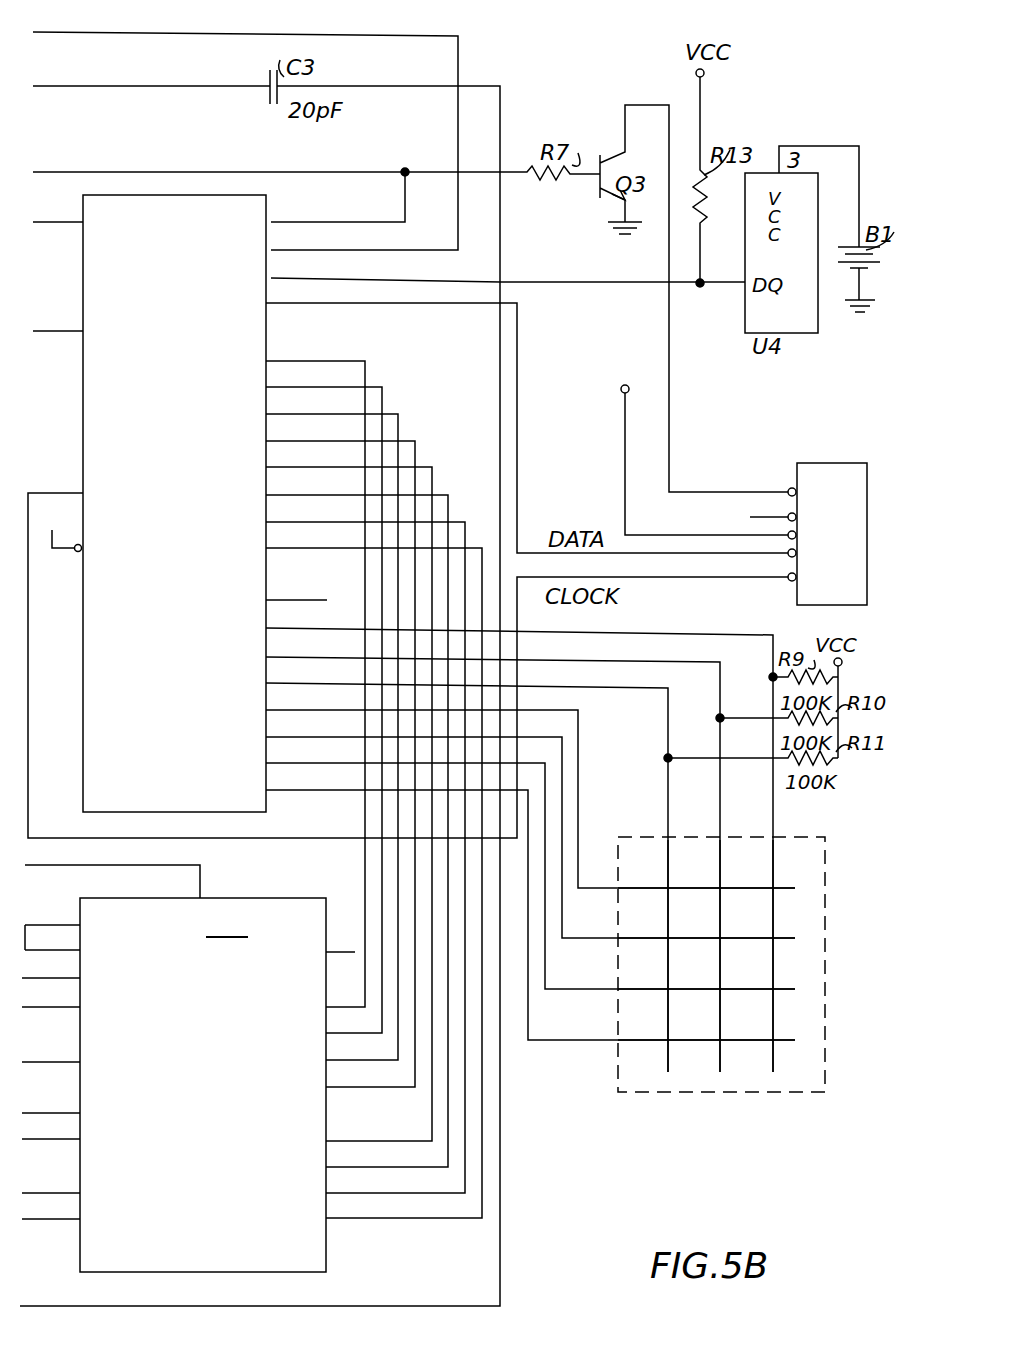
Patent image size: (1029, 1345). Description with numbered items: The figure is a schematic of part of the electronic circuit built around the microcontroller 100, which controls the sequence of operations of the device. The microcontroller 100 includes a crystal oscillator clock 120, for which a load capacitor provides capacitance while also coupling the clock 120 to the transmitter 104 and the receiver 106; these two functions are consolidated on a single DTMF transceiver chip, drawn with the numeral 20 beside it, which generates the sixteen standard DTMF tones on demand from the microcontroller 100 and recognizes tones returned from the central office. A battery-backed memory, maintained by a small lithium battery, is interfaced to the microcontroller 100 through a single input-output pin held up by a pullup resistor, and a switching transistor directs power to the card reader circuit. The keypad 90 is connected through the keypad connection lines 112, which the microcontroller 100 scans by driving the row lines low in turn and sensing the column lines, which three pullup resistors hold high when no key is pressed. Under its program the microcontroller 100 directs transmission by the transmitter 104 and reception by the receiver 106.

The microcontroller 100 is at (100, 425).
The crystal oscillator clock 120 is at (821, 531).
The keypad connection lines 112 is at (668, 800).
The keypad 90 is at (788, 1097).
The tone decoder 20 is at (134, 881).
The transmitter 104 is at (292, 1252).
The receiver 106 is at (190, 1060).